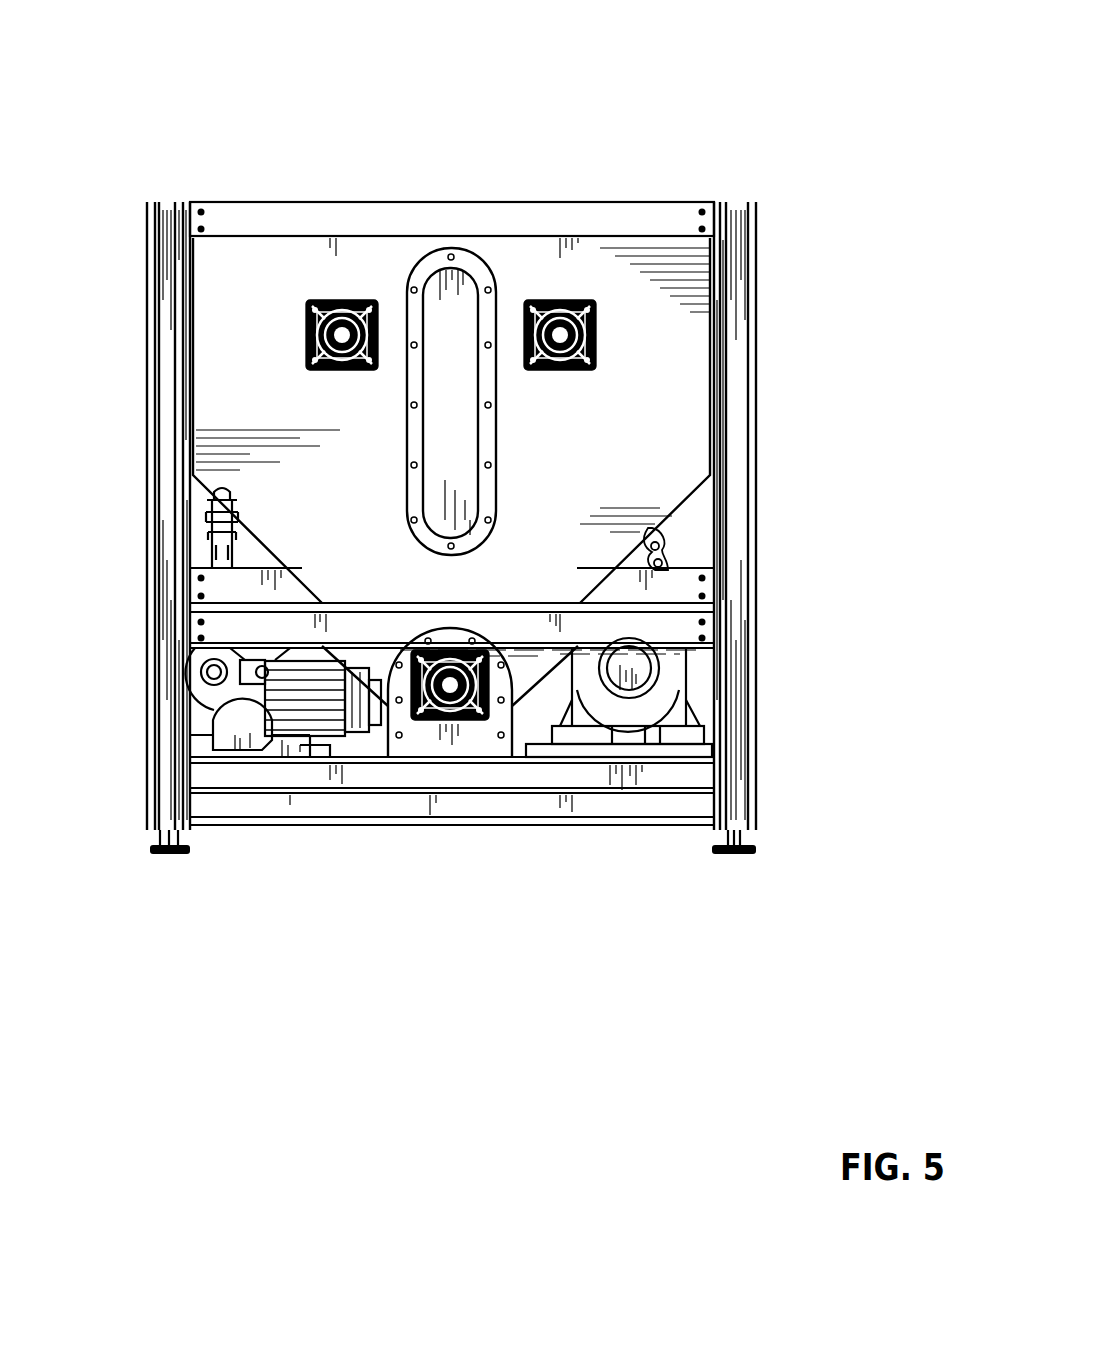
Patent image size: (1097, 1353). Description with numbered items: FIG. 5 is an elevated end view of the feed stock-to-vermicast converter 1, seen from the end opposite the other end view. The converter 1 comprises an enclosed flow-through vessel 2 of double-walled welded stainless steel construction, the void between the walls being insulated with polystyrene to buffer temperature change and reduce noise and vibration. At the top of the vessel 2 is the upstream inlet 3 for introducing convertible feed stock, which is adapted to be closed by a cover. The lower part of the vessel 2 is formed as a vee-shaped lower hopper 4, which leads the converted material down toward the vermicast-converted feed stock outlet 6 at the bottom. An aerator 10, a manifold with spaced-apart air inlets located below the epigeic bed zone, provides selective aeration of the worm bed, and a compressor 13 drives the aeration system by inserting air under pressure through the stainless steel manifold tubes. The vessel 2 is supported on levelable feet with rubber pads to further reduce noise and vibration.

The feed stock-to-vermicast converter 1 is at (643, 108).
The enclosed flow-through vessel 2 is at (660, 414).
The upstream inlet 3 is at (389, 198).
The vee-shaped lower hopper 4 is at (565, 586).
The vermicast-converted feed stock outlet 6 is at (468, 744).
The aerator 10 is at (220, 546).
The compressor 13 is at (205, 663).